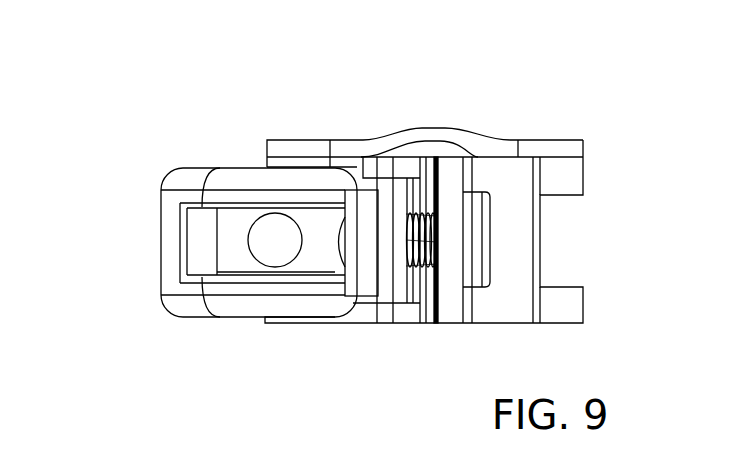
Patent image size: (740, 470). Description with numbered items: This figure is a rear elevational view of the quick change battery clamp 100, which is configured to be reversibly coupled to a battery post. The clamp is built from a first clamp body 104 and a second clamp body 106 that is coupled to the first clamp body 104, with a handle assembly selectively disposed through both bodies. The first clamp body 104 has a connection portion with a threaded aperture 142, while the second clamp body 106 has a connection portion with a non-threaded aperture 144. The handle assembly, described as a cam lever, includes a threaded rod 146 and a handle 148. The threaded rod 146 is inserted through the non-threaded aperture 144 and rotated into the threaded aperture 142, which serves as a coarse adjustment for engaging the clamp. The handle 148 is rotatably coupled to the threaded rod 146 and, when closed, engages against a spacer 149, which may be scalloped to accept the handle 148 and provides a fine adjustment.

The quick change battery clamp 100 is at (137, 80).
The first clamp body 104 is at (448, 326).
The second clamp body 106 is at (363, 326).
The threaded aperture 142 is at (487, 191).
The non-threaded aperture 144 is at (409, 206).
The threaded rod 146 is at (423, 266).
The handle 148 is at (160, 243).
The spacer 149 is at (368, 188).